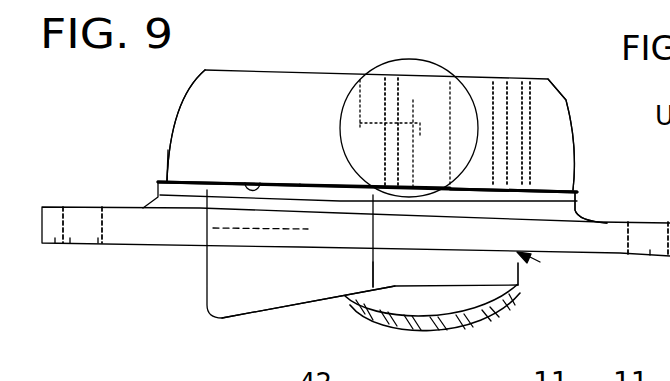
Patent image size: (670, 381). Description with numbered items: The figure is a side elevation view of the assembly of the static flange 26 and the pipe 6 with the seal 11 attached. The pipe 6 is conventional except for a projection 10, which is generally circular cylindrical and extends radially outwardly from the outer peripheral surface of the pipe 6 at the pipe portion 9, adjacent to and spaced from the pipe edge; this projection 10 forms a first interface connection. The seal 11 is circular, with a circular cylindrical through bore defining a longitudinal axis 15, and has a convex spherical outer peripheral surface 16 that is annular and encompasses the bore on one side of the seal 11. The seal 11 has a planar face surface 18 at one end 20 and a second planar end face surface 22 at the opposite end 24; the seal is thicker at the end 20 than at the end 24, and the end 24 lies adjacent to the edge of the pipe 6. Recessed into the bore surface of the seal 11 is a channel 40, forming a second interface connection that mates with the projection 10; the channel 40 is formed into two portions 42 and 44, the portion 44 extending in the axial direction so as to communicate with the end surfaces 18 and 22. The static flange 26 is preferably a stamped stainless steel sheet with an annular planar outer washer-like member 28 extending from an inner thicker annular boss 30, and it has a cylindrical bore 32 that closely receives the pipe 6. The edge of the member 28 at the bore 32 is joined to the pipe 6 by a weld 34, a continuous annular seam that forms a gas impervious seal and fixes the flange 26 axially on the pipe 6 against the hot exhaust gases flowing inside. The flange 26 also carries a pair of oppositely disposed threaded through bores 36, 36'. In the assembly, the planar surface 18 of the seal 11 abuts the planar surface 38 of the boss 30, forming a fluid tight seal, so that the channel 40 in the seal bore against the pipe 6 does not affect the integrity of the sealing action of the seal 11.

The pipe 6 is at (250, 305).
The pipe portion 9 is at (545, 105).
The projection 10 is at (353, 80).
The seal 11 is at (594, 134).
The longitudinal axis 15 is at (370, 267).
The convex spherical outer peripheral surface 16 is at (173, 118).
The planar face surface 18 is at (265, 183).
The end 20 is at (174, 167).
The second planar end face surface 22 is at (530, 57).
The end 24 is at (200, 74).
The static flange 26 is at (177, 323).
The annular planar outer washer-like member 28 is at (127, 208).
The inner thicker annular boss 30 is at (578, 201).
The cylindrical bore 32 is at (356, 231).
The weld 34 is at (203, 255).
The threaded through bores 36 is at (76, 262).
The rail end portion 36' is at (630, 262).
The planar surface 38 is at (292, 182).
The channel 40 is at (384, 60).
The portion 42 is at (412, 184).
The portion 44 is at (447, 187).